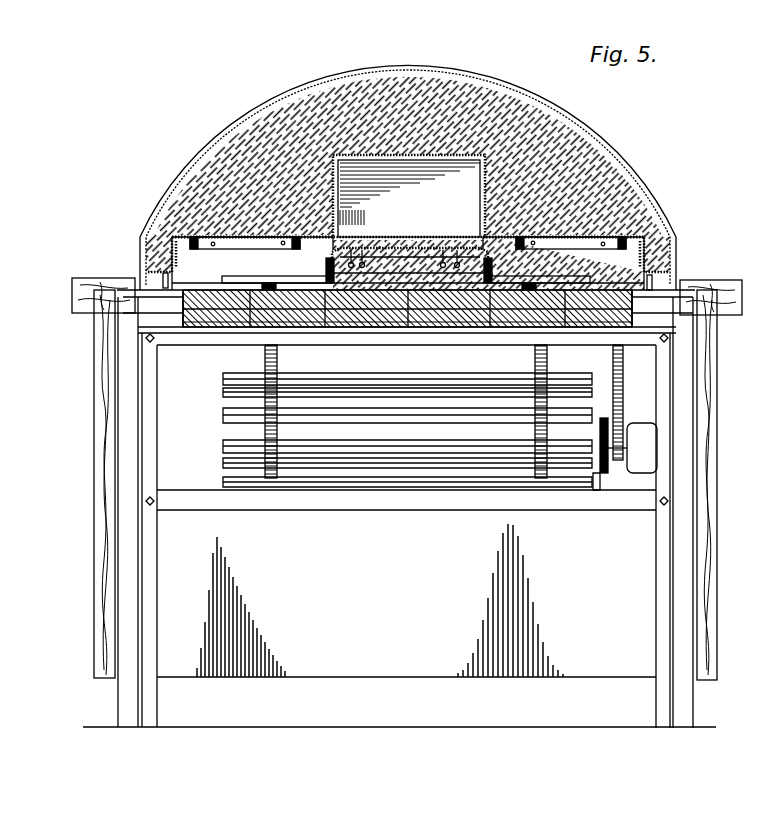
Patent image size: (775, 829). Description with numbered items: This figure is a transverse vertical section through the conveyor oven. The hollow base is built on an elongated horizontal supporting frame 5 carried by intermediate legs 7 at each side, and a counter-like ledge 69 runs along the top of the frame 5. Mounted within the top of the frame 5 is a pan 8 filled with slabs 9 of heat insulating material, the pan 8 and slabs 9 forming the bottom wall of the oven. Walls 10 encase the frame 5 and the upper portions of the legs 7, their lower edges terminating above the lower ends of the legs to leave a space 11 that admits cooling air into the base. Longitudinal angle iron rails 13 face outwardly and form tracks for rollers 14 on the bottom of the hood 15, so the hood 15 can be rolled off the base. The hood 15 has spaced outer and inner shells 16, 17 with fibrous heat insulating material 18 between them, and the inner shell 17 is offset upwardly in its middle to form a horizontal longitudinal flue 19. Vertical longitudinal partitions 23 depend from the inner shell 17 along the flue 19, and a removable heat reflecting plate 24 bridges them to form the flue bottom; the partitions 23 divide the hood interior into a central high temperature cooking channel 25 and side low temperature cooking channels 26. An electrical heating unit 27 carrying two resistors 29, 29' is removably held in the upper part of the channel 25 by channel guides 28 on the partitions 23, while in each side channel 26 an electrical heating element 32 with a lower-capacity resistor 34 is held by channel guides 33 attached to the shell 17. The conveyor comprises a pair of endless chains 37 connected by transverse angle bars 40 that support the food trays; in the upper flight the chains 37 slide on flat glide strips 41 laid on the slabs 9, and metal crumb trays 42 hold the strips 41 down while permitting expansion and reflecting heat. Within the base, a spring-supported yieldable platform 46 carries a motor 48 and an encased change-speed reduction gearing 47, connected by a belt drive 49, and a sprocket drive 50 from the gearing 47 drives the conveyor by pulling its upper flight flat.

The supporting frame 5 is at (696, 286).
The intermediate legs 7 is at (148, 607).
The pan 8 is at (383, 330).
The slabs 9 is at (360, 330).
The walls 10 is at (100, 405).
The space 11 is at (112, 694).
The angle iron rails 13 is at (184, 276).
The rollers 14 is at (168, 285).
The hood 15 is at (222, 137).
The outer shell 16 is at (202, 157).
The inner shell 17 is at (255, 237).
The fibrous heat insulating material 18 is at (536, 118).
The flue 19 is at (378, 166).
The partitions 23 is at (327, 266).
The heat reflecting plate 24 is at (381, 250).
The high temperature cooking channel 25 is at (408, 268).
The low temperature cooking channels 26 is at (238, 252).
The electrical heating unit 27 is at (434, 262).
The channel guides 28 is at (401, 308).
The resistor 29 is at (352, 246).
The resistor 29' is at (460, 250).
The electrical heating element 32 is at (300, 236).
The channel guides 33 is at (192, 236).
The resistor 34 is at (268, 243).
The endless chains 37 is at (296, 283).
The transverse angle bars 40 is at (223, 416).
The glide strips 41 is at (401, 308).
The crumb trays 42 is at (407, 308).
The yieldable platform 46 is at (435, 498).
The change-speed reduction gearing 47 is at (597, 490).
The motor 48 is at (645, 430).
The belt drive 49 is at (605, 476).
The sprocket drive 50 is at (620, 396).
The counter-like ledge 69 is at (90, 282).